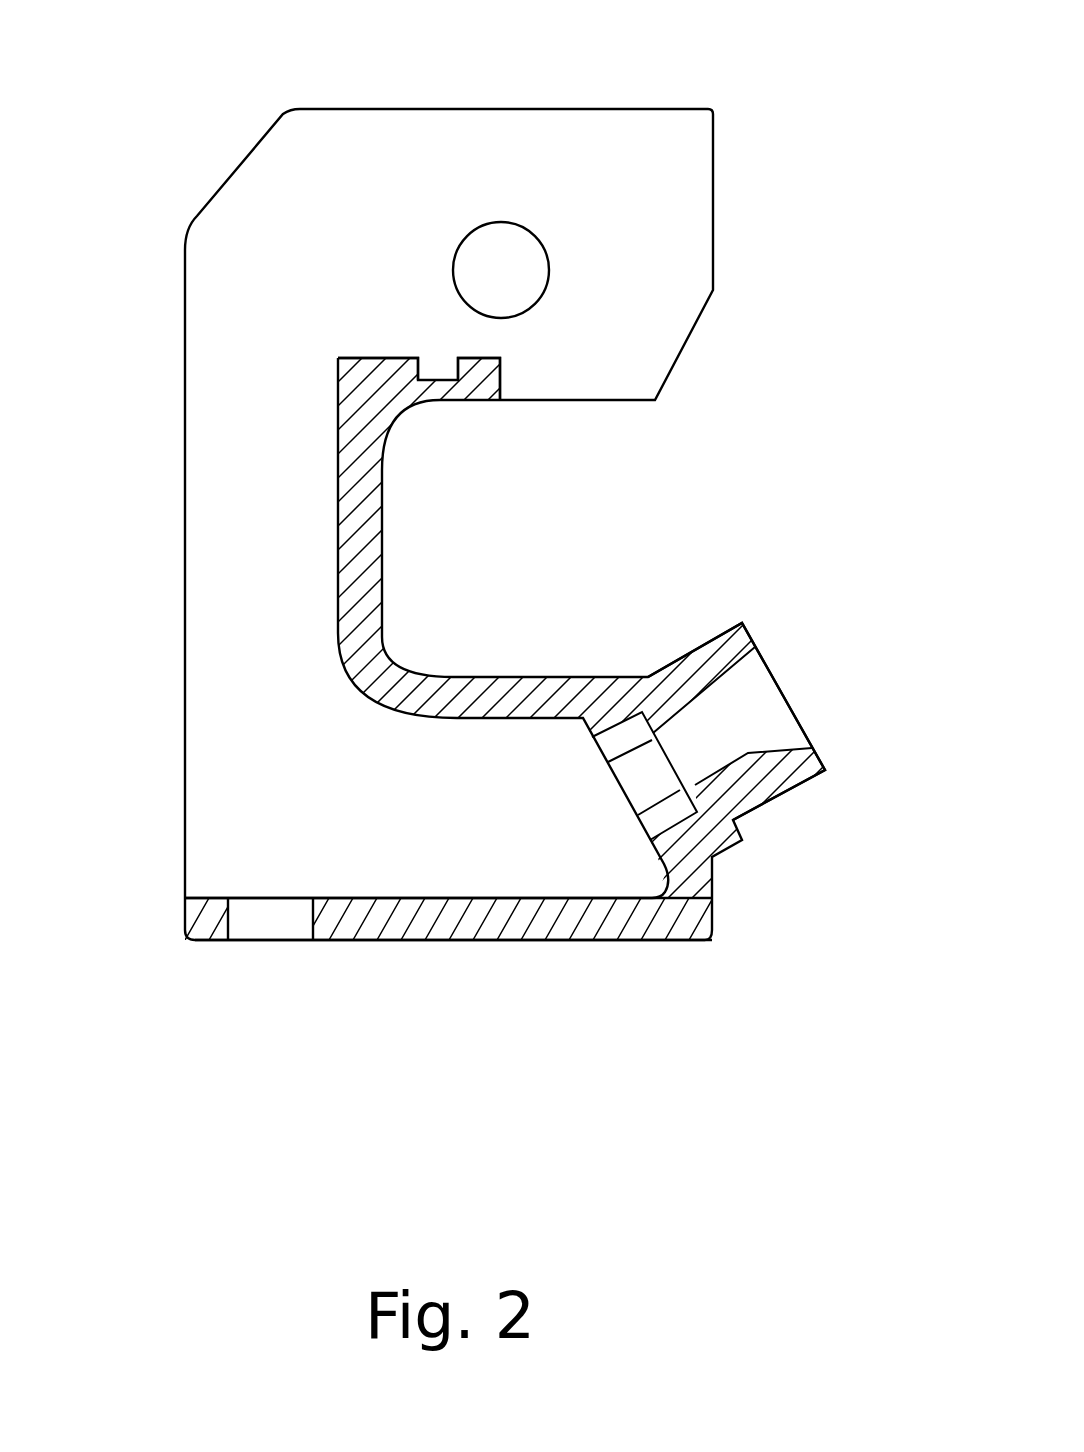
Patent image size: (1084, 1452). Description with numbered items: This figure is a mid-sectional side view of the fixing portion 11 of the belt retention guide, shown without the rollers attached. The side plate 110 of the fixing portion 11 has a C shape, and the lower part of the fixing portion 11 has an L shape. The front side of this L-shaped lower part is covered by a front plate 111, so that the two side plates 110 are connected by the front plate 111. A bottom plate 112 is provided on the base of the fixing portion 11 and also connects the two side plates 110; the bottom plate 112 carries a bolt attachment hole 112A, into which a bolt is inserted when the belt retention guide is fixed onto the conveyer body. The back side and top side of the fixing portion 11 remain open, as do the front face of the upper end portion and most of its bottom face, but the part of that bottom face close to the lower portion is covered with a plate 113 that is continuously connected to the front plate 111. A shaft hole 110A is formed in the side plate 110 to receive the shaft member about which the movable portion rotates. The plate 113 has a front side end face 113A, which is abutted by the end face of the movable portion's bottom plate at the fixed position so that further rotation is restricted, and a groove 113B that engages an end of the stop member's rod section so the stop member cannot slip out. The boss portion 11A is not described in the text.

The fixing portion 11 is at (441, 1032).
The boss portion 11A is at (777, 798).
The side plate 110 is at (222, 525).
The shaft hole 110A is at (522, 228).
The front plate 111 is at (382, 567).
The bottom plate 112 is at (372, 945).
The bolt attachment hole 112A is at (226, 918).
The plate 113 is at (438, 402).
The front side end face 113A is at (502, 377).
The groove 113B is at (437, 380).